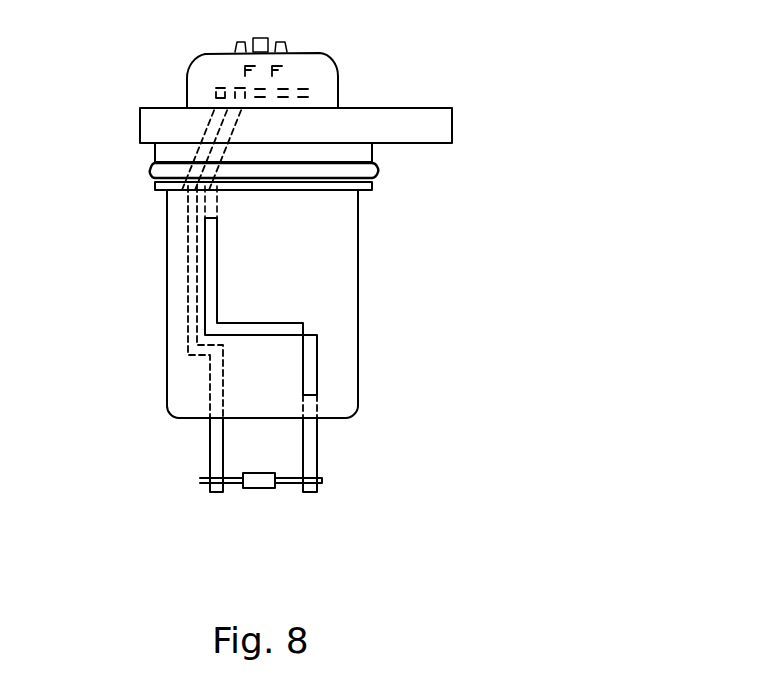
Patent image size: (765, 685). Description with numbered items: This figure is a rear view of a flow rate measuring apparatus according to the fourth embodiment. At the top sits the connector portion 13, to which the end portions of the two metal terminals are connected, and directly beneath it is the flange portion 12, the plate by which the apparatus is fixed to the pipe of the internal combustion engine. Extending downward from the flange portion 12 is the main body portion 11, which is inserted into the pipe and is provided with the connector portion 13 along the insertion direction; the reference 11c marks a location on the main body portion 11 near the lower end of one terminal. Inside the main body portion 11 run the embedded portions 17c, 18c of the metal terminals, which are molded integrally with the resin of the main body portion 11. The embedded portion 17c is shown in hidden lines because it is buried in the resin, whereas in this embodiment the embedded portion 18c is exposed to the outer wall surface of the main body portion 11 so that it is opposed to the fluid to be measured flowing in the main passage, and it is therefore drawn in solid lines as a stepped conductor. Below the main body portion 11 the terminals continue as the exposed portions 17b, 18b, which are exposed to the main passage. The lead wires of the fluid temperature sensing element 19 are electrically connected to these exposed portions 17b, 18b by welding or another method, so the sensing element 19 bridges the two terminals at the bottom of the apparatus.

The connector portion 13 is at (197, 72).
The flange portion 12 is at (407, 108).
The main body portion 11 is at (355, 323).
The opening of housing 11c is at (335, 378).
The embedded portion 17c is at (192, 273).
The embedded portion 18c is at (210, 273).
The exposed portion 17b is at (210, 460).
The exposed portion 18b is at (310, 460).
The fluid temperature sensing element 19 is at (255, 490).